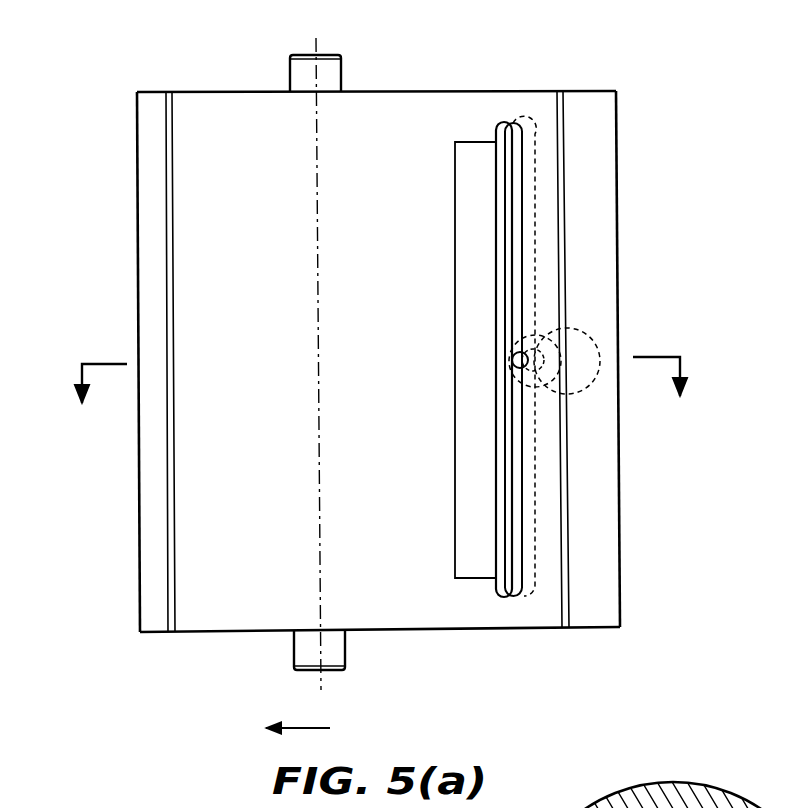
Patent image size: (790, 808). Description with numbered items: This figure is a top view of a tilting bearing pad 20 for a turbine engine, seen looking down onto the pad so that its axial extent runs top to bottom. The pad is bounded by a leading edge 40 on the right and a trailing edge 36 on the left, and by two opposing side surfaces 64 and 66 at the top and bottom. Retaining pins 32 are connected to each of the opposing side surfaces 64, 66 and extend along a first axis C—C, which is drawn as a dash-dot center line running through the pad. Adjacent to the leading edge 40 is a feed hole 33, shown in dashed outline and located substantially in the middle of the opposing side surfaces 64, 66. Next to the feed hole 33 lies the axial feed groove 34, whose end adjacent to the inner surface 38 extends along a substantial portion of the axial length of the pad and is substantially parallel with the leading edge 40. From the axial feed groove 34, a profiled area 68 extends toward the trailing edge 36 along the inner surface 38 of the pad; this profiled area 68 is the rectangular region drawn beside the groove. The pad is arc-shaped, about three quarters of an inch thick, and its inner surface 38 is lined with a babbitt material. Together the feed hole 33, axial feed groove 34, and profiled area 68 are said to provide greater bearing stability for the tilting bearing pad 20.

The rotary cutting unit 20 is at (98, 62).
The retaining pins 32 is at (330, 71).
The feed hole 33 is at (576, 354).
The axial feed groove 34 is at (515, 204).
The trailing edge 36 is at (139, 558).
The inner surface 38 is at (208, 622).
The leading edge 40 is at (620, 497).
The side surface 64 is at (455, 91).
The side surface 66 is at (482, 629).
The profiled area 68 is at (471, 228).